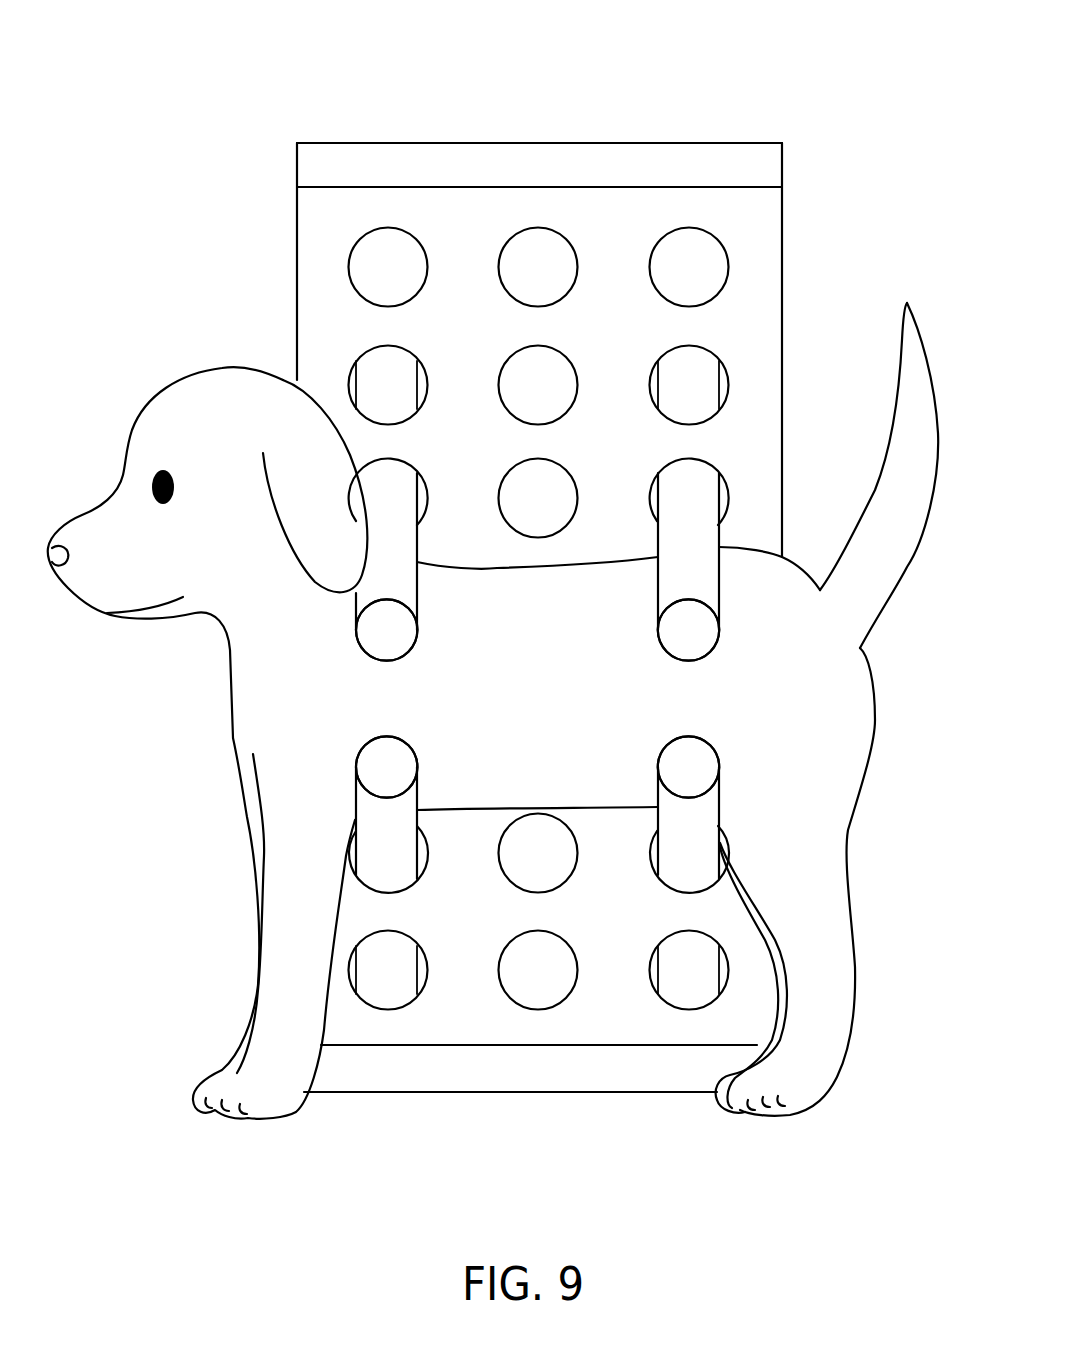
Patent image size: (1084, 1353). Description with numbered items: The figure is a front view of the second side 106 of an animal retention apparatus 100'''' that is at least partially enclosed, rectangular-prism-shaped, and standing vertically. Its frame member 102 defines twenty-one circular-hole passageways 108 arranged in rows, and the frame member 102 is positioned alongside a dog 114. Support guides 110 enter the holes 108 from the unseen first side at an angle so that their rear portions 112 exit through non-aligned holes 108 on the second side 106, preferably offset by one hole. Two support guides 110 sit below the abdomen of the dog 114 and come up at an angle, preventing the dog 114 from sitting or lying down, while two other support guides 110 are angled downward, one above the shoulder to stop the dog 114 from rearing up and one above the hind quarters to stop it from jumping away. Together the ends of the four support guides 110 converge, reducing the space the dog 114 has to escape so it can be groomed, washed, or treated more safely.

The animal retention apparatus 100'''' is at (881, 52).
The frame member 102 is at (445, 1071).
The second side 106 is at (338, 230).
The circular-hole passageways 108 is at (387, 275).
The support guides 110 is at (690, 572).
The rear portions 112 is at (697, 828).
The dog 114 is at (276, 750).